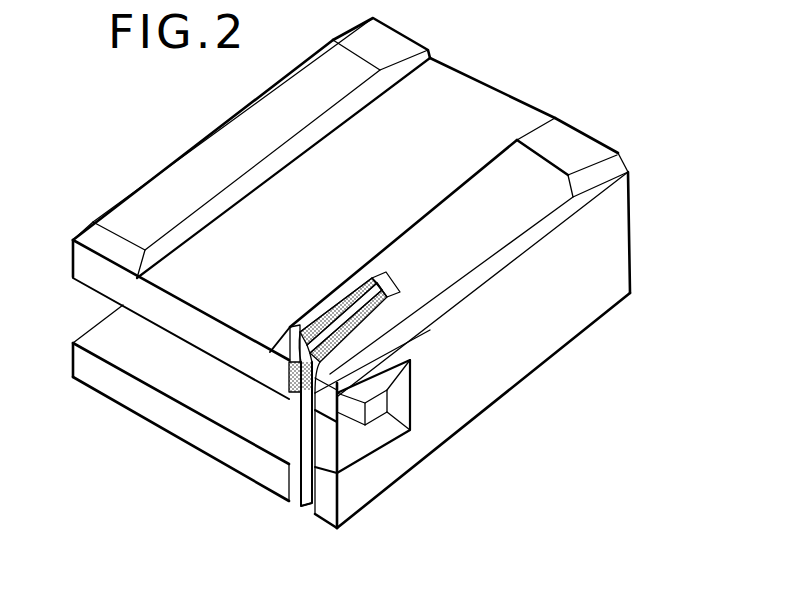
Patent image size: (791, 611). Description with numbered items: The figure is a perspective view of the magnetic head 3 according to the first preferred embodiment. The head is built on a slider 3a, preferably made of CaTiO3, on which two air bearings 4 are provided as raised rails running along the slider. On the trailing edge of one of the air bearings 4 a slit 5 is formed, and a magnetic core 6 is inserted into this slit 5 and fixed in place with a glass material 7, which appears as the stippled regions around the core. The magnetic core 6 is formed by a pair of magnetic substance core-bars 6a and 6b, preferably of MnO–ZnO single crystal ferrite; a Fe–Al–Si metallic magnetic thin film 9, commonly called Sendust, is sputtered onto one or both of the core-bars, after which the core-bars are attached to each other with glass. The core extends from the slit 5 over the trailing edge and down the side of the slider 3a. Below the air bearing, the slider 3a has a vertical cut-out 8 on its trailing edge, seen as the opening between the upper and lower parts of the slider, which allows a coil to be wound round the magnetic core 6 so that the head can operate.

The magnetic head 3 is at (492, 78).
The slider 3a is at (532, 106).
The air bearing 4 is at (527, 190).
The slit 5 is at (392, 303).
The magnetic core 6 is at (307, 500).
The magnetic substance core-bar 6a is at (382, 306).
The magnetic substance core-bar 6b is at (303, 442).
The glass material 7 is at (345, 319).
The vertical cut-out 8 is at (273, 440).
The Fe–Al–Si metallic magnetic thin film 9 is at (333, 312).